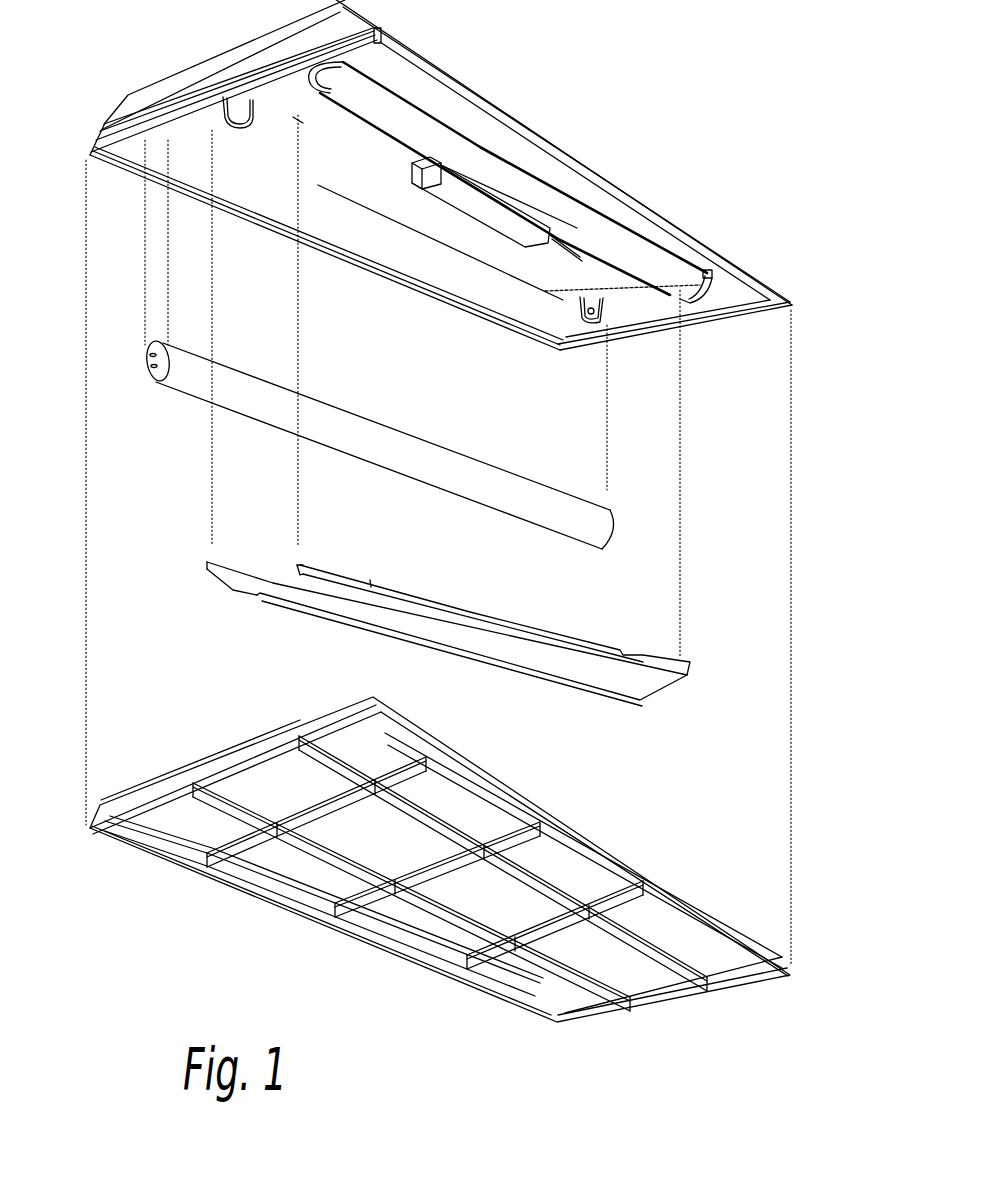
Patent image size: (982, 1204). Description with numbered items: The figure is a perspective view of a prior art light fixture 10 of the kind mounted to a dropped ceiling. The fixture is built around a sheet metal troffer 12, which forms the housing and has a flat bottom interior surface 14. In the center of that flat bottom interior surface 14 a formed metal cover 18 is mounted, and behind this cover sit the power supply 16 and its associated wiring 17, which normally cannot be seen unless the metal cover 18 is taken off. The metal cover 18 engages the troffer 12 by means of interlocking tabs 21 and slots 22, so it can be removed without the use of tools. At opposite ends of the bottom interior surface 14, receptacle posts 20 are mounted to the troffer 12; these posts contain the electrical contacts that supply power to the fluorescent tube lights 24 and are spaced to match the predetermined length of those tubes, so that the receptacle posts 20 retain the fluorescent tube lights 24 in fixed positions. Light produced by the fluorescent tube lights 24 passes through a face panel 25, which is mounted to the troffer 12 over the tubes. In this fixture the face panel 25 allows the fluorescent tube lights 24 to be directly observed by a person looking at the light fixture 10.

The light fixture 10 is at (697, 160).
The sheet metal troffer 12 is at (150, 92).
The flat bottom interior surface 14 is at (300, 150).
The power supply 16 is at (500, 174).
The wiring 17 is at (508, 166).
The formed metal cover 18 is at (557, 660).
The receptacle posts 20 is at (233, 113).
The interlocking tabs 21 is at (370, 580).
The slots 22 is at (633, 282).
The fluorescent tube lights 24 is at (520, 497).
The face panel 25 is at (628, 867).